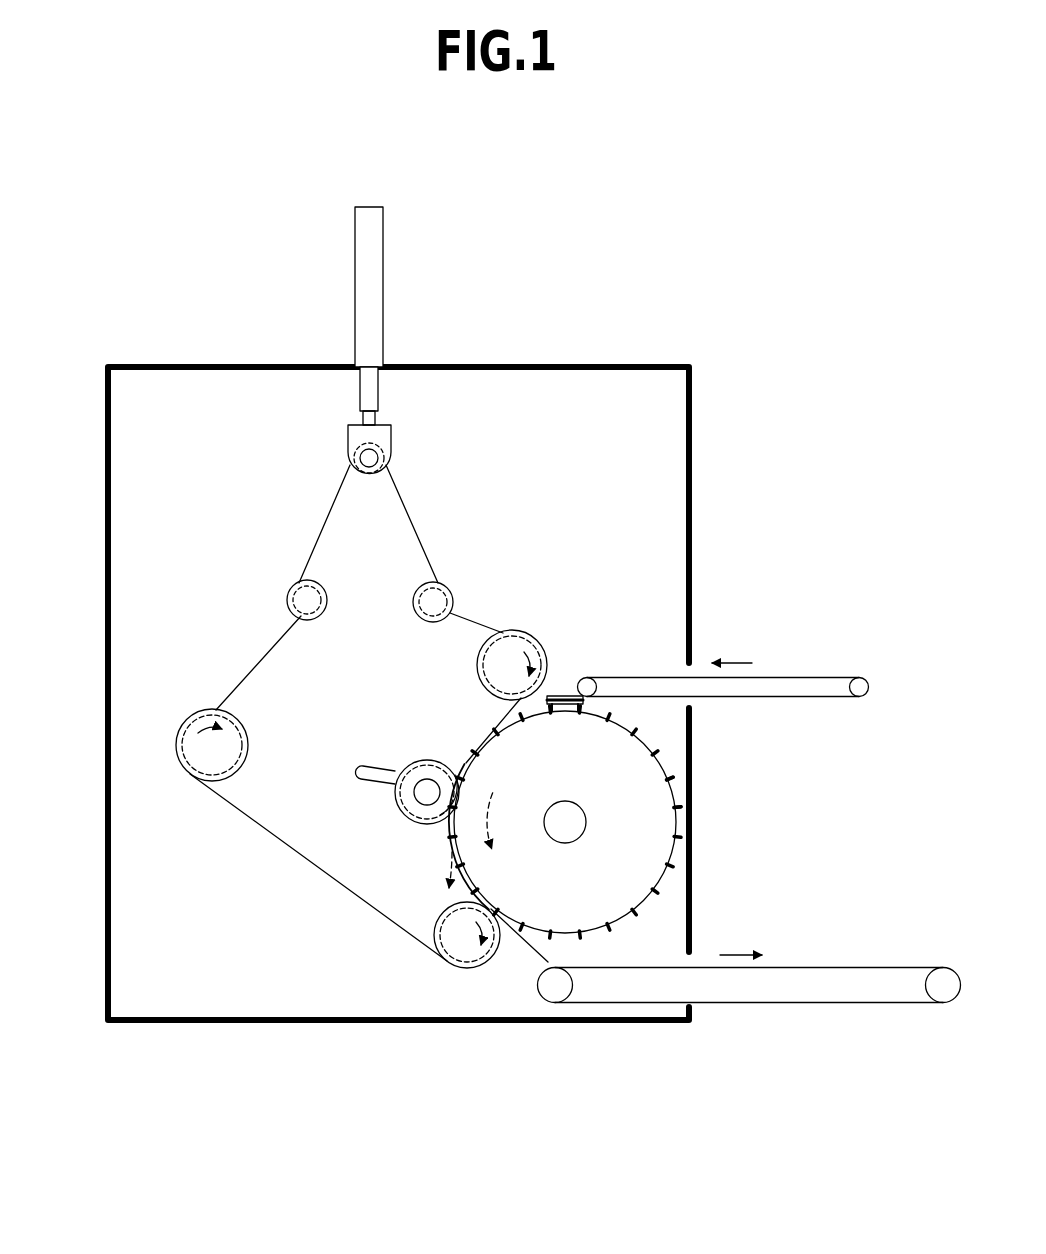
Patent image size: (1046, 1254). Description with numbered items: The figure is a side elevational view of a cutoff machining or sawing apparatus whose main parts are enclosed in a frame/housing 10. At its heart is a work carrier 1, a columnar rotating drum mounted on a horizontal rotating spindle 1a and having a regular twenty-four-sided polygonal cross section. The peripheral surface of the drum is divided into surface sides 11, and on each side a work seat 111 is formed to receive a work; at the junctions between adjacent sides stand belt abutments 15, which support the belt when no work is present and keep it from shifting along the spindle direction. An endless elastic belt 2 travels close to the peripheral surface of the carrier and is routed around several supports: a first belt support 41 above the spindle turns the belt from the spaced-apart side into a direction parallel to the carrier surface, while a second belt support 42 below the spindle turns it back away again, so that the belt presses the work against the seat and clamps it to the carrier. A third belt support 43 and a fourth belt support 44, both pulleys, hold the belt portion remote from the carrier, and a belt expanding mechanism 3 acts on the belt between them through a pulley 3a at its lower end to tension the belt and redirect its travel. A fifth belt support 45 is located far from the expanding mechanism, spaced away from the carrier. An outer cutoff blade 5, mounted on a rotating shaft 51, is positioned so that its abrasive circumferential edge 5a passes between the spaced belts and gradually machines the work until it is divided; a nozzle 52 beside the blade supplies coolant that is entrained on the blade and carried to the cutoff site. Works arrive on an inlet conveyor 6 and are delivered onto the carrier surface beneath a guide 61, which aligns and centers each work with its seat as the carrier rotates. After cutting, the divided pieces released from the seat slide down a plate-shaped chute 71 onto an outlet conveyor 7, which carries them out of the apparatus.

The work carrier 1 is at (622, 832).
The rotating spindle 1a is at (578, 818).
The surface sides 11 is at (677, 825).
The work seats 111 is at (677, 815).
The belt abutments 15 is at (672, 779).
The elastic belt 2 is at (477, 623).
The belt expanding mechanism 3 is at (372, 392).
The pulley 3a is at (383, 438).
The first belt support 41 is at (515, 660).
The second belt support 42 is at (467, 945).
The third belt support 43 is at (433, 600).
The fourth belt support 44 is at (307, 598).
The fifth belt support 45 is at (200, 748).
The outer cutoff blade 5 is at (427, 775).
The circumferential edge 5a is at (440, 766).
The rotating shaft 51 is at (427, 792).
The nozzle 52 is at (372, 772).
The inlet conveyor 6 is at (770, 688).
The guide 61 is at (567, 695).
The outlet conveyor 7 is at (805, 985).
The chute 71 is at (520, 945).
The frame/housing 10 is at (150, 365).